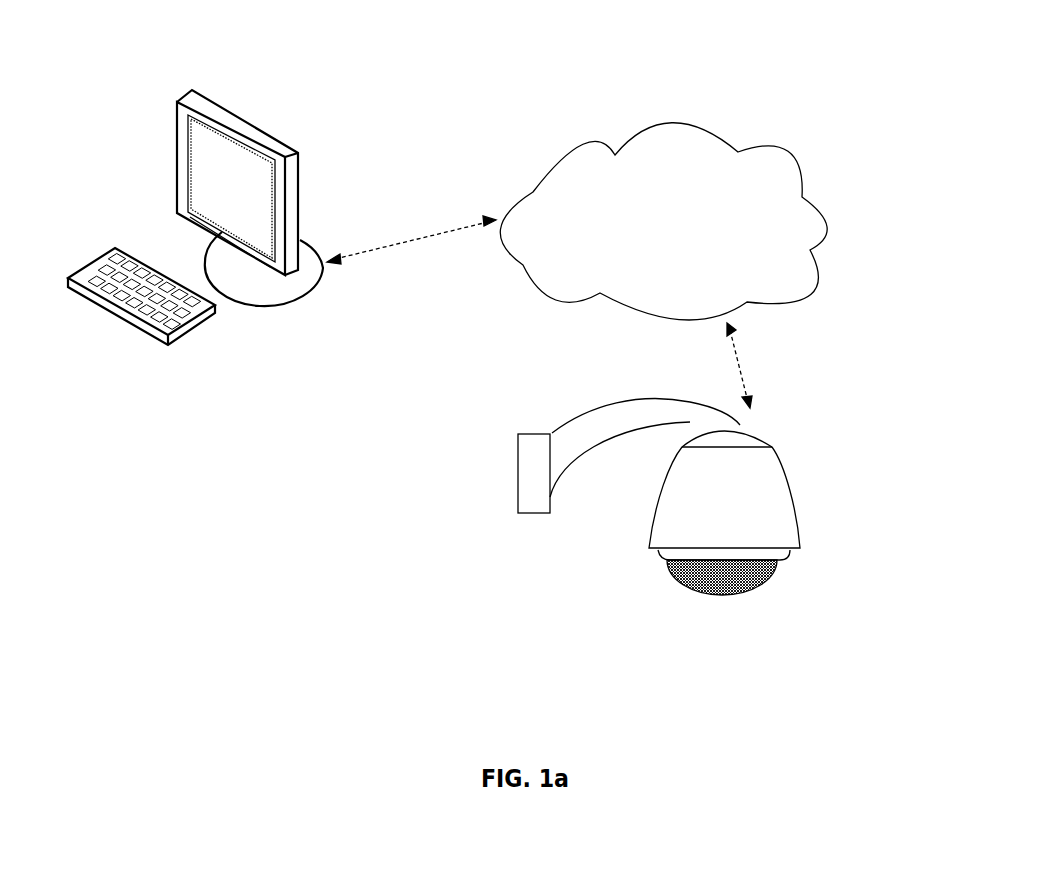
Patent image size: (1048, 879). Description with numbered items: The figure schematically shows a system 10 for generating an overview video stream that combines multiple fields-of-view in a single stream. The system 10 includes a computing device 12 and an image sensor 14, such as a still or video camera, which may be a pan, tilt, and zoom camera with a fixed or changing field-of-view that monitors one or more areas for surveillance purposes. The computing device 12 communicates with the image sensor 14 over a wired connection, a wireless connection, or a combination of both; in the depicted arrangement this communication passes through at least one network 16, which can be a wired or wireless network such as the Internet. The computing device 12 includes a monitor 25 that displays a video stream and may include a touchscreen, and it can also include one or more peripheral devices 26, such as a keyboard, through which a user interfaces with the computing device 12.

The system 10 is at (946, 104).
The computing device 12 is at (125, 101).
The image sensor 14 is at (785, 475).
The network 16 is at (725, 143).
The monitor 25 is at (268, 128).
The peripheral devices 26 is at (122, 320).